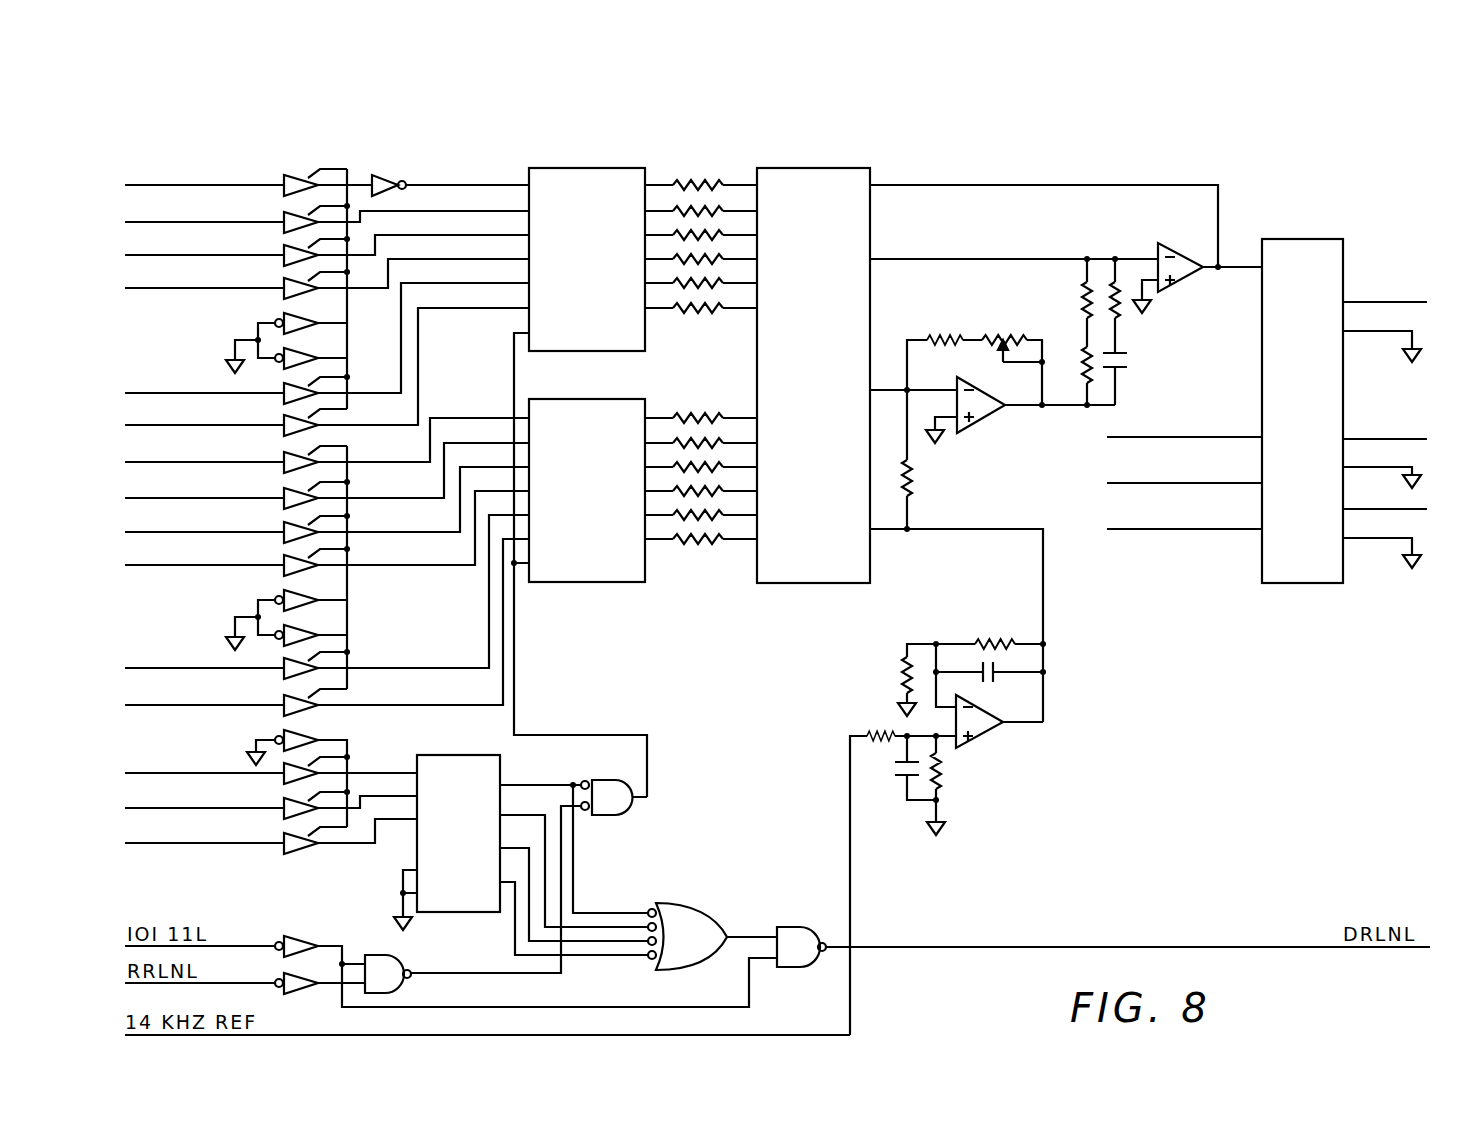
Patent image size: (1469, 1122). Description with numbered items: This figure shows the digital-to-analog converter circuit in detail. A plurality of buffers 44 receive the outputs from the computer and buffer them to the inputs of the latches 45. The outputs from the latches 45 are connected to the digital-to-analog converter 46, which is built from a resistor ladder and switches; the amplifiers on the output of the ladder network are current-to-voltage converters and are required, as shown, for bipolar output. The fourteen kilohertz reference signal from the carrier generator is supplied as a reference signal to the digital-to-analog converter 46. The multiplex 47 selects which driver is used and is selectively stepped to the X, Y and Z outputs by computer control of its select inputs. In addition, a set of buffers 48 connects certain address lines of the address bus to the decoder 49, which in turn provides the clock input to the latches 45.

The buffers 44 is at (306, 171).
The latches 45 is at (524, 176).
The digital-to-analog converter 46 is at (1230, 166).
The multiplex 47 is at (1285, 246).
The buffers 48 is at (321, 733).
The decoder 49 is at (437, 756).